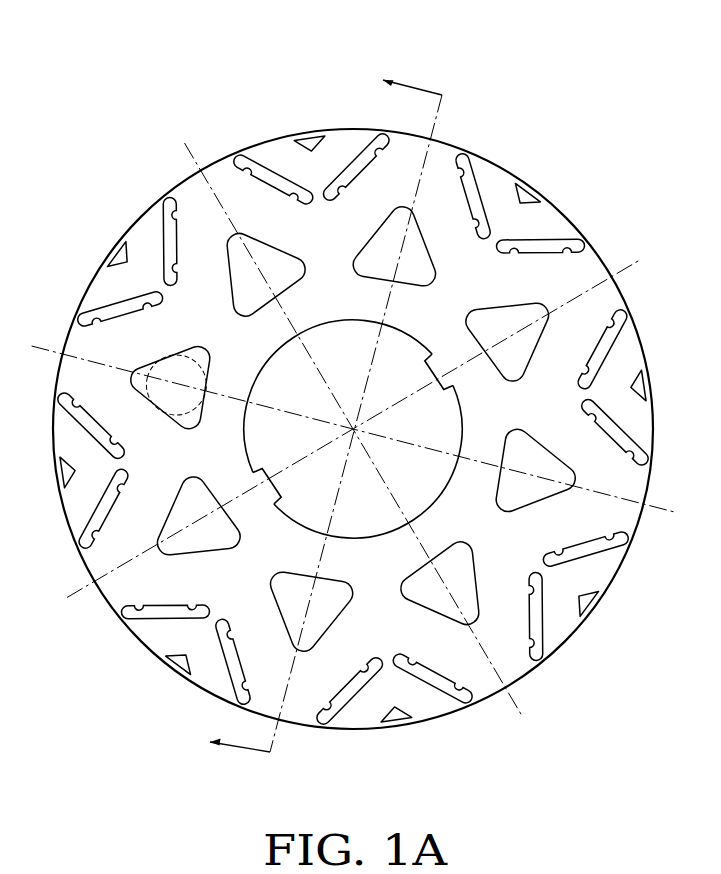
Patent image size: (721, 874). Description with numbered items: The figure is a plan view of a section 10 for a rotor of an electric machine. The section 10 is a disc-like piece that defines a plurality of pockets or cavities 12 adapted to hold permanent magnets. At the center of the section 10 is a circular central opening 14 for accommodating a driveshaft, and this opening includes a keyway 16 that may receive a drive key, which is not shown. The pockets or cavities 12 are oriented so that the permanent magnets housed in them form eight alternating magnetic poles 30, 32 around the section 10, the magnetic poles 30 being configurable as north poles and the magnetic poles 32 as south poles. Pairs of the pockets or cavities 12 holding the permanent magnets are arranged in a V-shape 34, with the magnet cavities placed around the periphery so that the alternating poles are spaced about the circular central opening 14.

The section 10 is at (283, 62).
The pockets or cavities 12 is at (372, 142).
The circular central opening 14 is at (407, 333).
The keyway 16 is at (433, 389).
The magnetic poles 30 is at (277, 140).
The magnetic poles 32 is at (123, 232).
The V-shape 34 is at (368, 172).